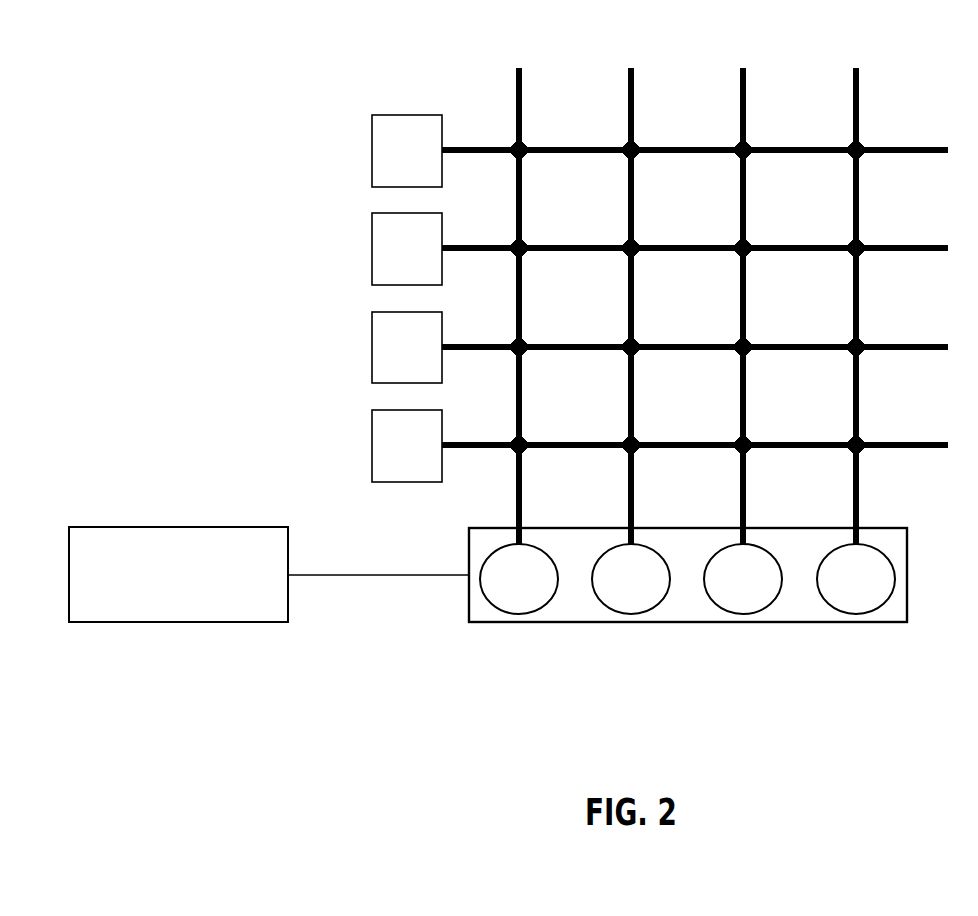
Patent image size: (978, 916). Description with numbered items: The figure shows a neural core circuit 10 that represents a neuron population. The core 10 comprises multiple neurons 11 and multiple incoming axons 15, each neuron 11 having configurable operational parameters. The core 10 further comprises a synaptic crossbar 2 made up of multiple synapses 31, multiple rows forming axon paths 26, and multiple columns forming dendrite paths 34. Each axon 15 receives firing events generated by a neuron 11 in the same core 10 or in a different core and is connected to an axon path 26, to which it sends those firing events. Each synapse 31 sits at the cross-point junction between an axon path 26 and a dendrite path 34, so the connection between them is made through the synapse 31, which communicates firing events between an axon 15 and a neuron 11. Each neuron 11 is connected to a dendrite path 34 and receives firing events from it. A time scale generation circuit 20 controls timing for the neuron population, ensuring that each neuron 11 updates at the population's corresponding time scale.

The neural core circuit 10 is at (583, 35).
The synaptic crossbar 2 is at (497, 123).
The dendrite path 34 is at (634, 97).
The synapse 31 is at (861, 143).
The axon path 26 is at (902, 448).
The axon 15 is at (399, 483).
The neuron 11 is at (857, 613).
The time scale generation circuit 20 is at (243, 622).